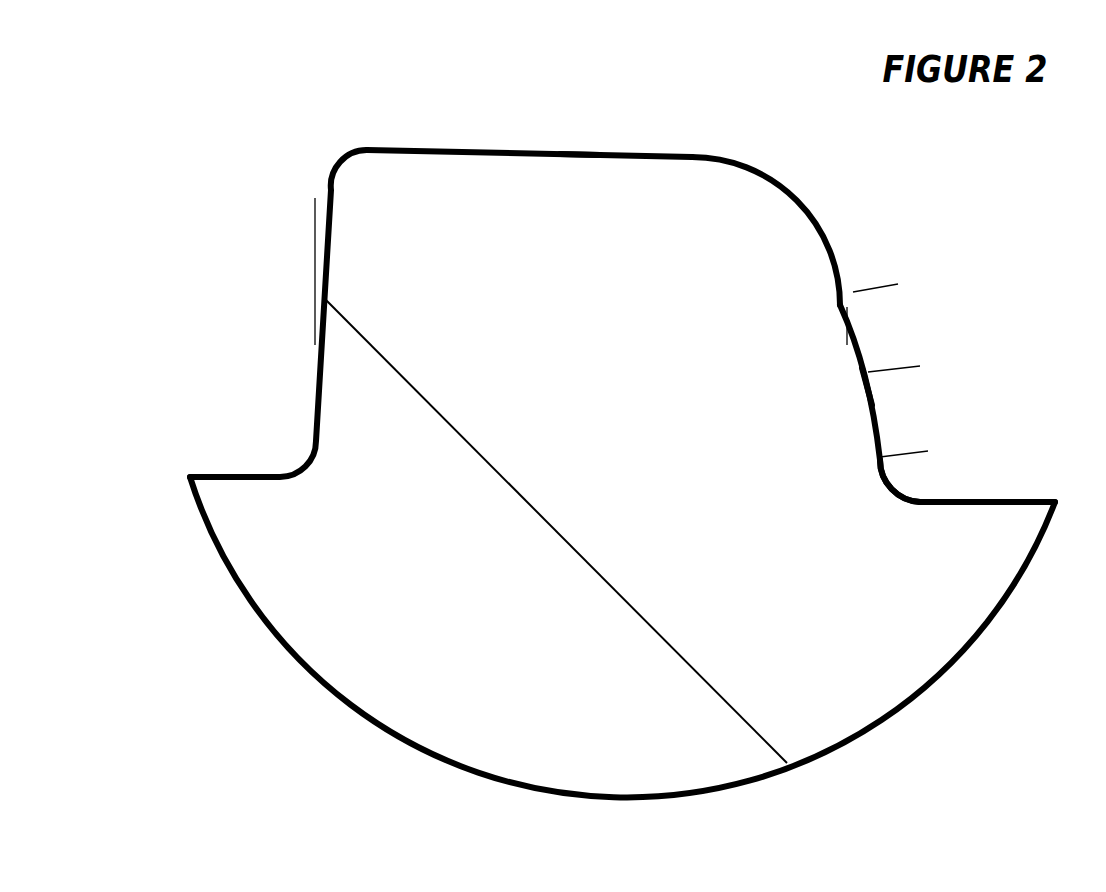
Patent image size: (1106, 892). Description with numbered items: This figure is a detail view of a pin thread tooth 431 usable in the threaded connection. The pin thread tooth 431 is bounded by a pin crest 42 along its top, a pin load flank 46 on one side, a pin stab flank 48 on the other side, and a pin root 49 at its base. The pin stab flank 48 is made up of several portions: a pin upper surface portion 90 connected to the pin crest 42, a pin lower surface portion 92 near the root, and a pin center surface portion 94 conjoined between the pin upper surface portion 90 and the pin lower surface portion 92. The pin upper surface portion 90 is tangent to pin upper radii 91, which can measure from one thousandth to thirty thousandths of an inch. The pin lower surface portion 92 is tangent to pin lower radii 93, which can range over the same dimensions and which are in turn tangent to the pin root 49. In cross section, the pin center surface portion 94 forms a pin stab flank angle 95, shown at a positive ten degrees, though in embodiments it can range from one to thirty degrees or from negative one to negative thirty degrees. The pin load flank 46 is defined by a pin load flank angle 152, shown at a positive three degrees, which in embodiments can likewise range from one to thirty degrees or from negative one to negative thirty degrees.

The pin crest 42 is at (540, 150).
The pin thread tooth 431 is at (582, 147).
The pin load flank 46 is at (314, 376).
The pin stab flank 48 is at (946, 353).
The pin root 49 is at (1008, 501).
The pin upper surface portion 90 is at (897, 286).
The pin upper radii 91 is at (793, 202).
The pin lower surface portion 92 is at (912, 368).
The pin lower radii 93 is at (894, 481).
The pin center surface portion 94 is at (869, 375).
The pin stab flank angle 95 is at (878, 333).
The pin load flank angle 152 is at (372, 210).